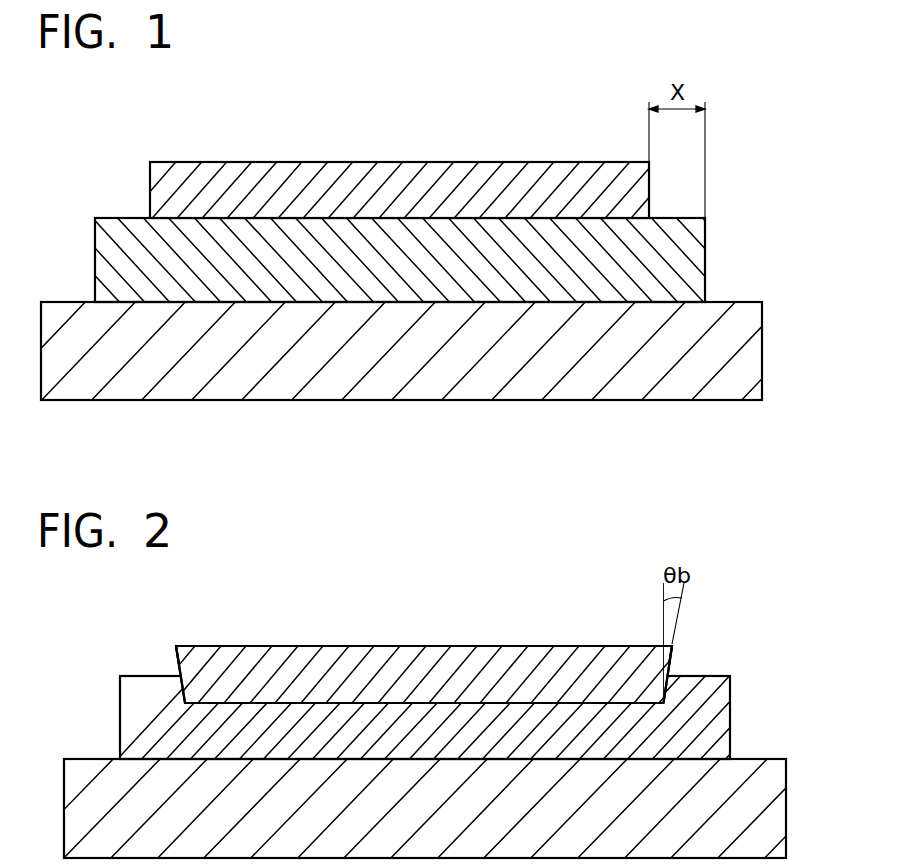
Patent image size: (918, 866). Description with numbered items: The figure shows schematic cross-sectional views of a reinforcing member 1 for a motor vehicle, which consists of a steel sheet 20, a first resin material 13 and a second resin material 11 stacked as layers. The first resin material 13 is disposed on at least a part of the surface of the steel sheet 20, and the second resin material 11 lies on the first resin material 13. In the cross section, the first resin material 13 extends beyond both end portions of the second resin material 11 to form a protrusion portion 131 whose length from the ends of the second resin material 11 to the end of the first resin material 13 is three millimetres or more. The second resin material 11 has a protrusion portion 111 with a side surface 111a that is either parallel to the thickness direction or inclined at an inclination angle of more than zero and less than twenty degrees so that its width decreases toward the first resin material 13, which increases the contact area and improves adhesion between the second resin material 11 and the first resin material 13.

In FIG. 1, the reinforcing member 1 is at (430, 237).
In FIG. 1, the second resin material 11 is at (393, 162).
In FIG. 2, the second resin material 11 is at (421, 646).
In FIG. 1, the first resin material 13 is at (705, 260).
In FIG. 2, the first resin material 13 is at (119, 720).
In FIG. 1, the protrusion portion 131 is at (97, 277).
In FIG. 1, the steel sheet 20 is at (762, 350).
In FIG. 2, the steel sheet 20 is at (786, 805).
In FIG. 2, the protrusion portion 111 is at (189, 666).
In FIG. 2, the side surface 111a is at (174, 666).